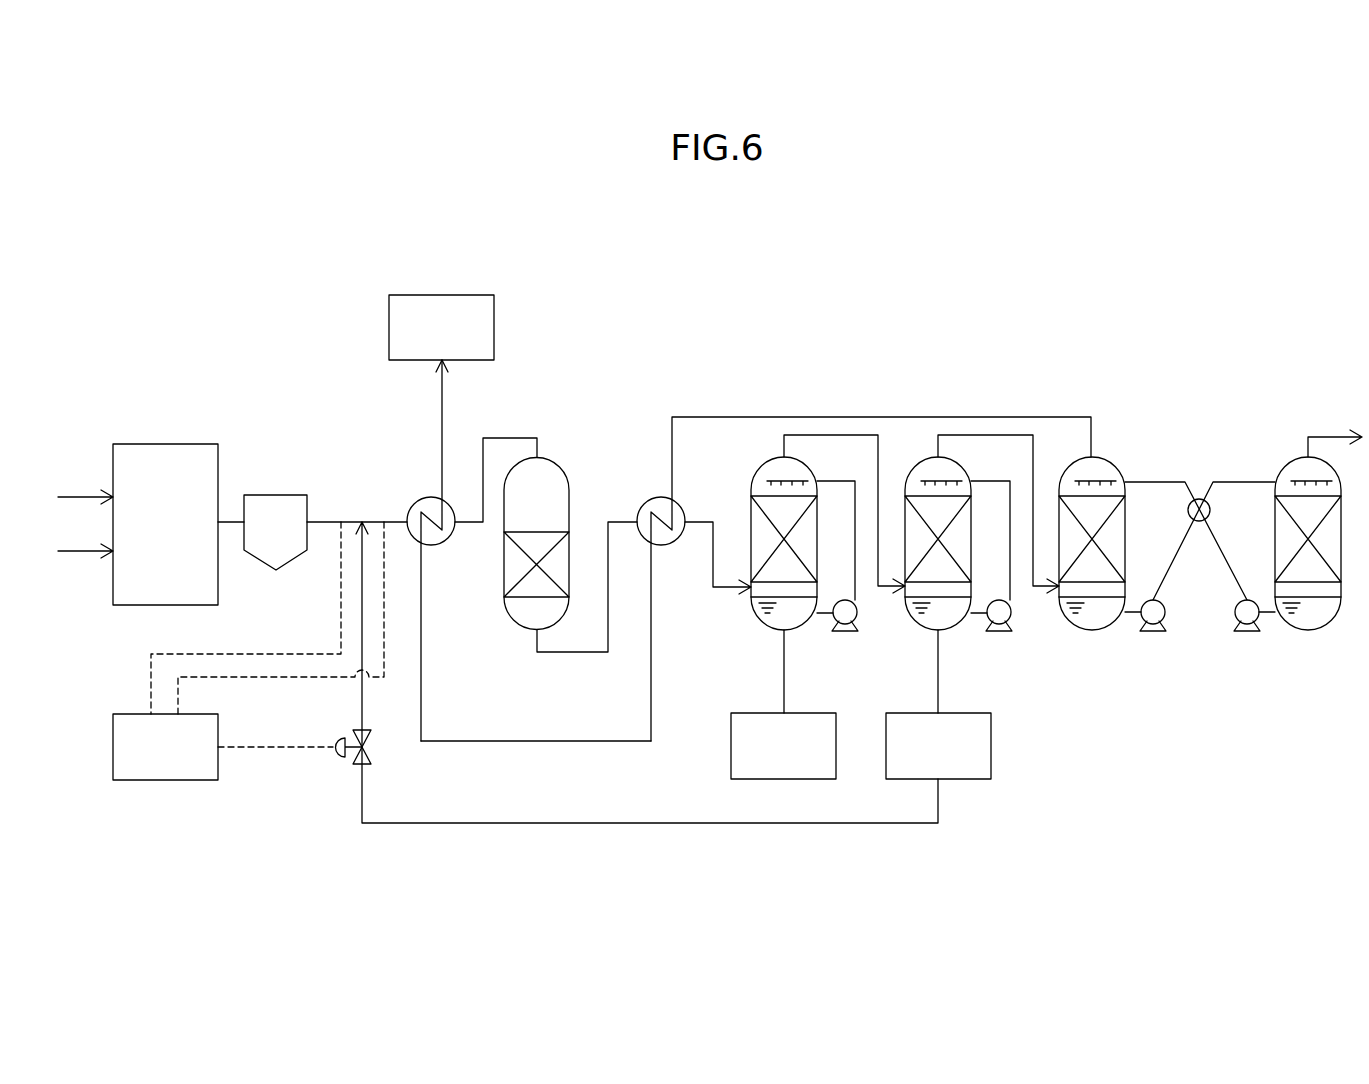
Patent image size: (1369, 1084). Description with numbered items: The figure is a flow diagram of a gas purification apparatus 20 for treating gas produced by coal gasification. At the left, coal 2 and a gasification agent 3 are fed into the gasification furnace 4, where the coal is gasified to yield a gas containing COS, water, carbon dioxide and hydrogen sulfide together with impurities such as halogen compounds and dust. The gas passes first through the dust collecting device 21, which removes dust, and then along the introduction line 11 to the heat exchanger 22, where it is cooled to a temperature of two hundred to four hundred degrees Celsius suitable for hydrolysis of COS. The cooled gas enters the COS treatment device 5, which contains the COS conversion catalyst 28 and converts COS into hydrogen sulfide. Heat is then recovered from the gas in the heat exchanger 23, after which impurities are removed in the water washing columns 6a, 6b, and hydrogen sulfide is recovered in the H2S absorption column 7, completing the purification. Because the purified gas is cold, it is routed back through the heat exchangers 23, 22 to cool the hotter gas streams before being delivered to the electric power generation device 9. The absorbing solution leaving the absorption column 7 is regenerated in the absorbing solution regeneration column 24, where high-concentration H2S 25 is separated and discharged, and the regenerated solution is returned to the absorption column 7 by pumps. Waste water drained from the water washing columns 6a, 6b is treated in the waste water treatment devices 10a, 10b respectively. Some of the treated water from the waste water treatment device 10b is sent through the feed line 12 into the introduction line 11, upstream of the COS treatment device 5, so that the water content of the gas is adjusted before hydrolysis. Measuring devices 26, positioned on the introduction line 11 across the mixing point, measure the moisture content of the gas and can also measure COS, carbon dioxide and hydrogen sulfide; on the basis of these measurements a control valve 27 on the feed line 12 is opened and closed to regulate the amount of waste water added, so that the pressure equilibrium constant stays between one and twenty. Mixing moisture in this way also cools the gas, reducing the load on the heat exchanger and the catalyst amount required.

The coal 2 is at (72, 497).
The gasification agent 3 is at (80, 551).
The gasification furnace 4 is at (163, 444).
The dust collecting device 21 is at (276, 495).
The introduction line 11 is at (319, 528).
The heat exchanger 22 is at (410, 505).
The electric power generation device 9 is at (430, 295).
The gas purification apparatus 20 is at (697, 338).
The COS treatment device 5 is at (550, 574).
The COS conversion catalyst 28 is at (565, 557).
The heat exchanger 23 is at (682, 543).
The water washing column 6a is at (815, 630).
The water washing column 6b is at (970, 630).
The H2S absorption column 7 is at (1128, 633).
The absorbing solution regeneration column 24 is at (1301, 647).
The high-concentration H2S 25 is at (1334, 437).
The waste water treatment device 10a is at (731, 744).
The waste water treatment device 10b is at (991, 740).
The feed line 12 is at (365, 793).
The measuring device 26 is at (172, 780).
The control valve 27 is at (344, 742).